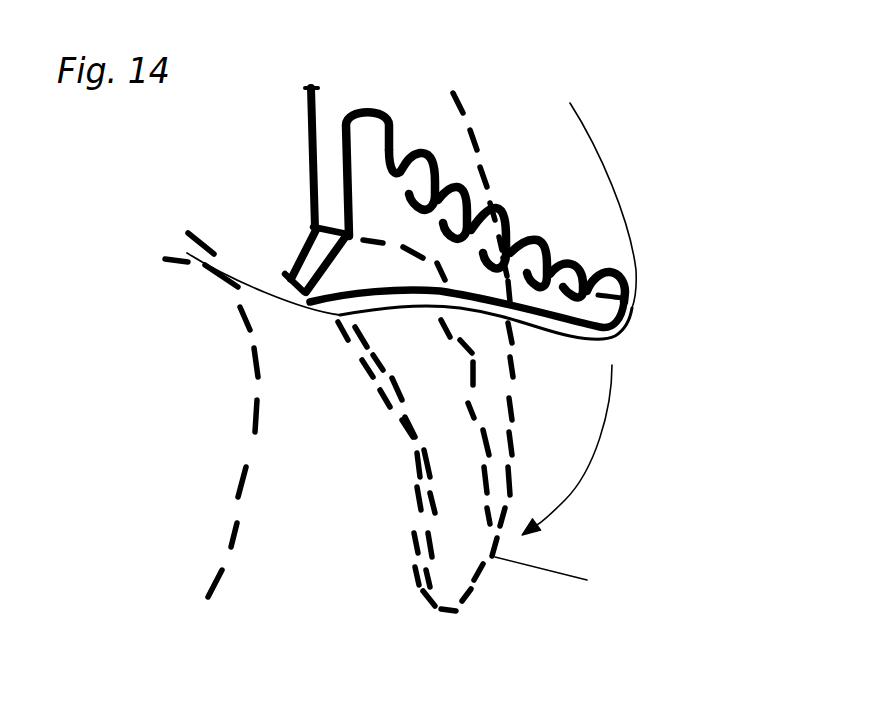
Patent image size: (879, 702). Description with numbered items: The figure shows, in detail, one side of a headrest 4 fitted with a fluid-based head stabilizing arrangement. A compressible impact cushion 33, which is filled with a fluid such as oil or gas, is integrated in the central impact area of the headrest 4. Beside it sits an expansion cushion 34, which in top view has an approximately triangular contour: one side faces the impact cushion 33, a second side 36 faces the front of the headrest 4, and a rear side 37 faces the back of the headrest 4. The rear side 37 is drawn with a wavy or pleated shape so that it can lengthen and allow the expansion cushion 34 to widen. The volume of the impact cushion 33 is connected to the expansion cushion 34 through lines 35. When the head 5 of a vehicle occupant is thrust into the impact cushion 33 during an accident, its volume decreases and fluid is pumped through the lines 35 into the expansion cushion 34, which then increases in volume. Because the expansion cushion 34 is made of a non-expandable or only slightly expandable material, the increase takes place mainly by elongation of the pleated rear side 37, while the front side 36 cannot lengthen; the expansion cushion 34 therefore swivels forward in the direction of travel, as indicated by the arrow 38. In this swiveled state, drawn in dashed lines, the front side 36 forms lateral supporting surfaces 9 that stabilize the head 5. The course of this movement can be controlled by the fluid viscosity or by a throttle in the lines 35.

The headrest 4 is at (611, 147).
The head 5 is at (256, 428).
The lateral supporting surfaces 9 is at (399, 545).
The impact cushion 33 is at (312, 104).
The expansion cushion 34 is at (632, 310).
The lines 35 is at (297, 252).
The second side (front side) 36 is at (406, 312).
The rear side 37 is at (545, 232).
The arrow 38 is at (607, 455).